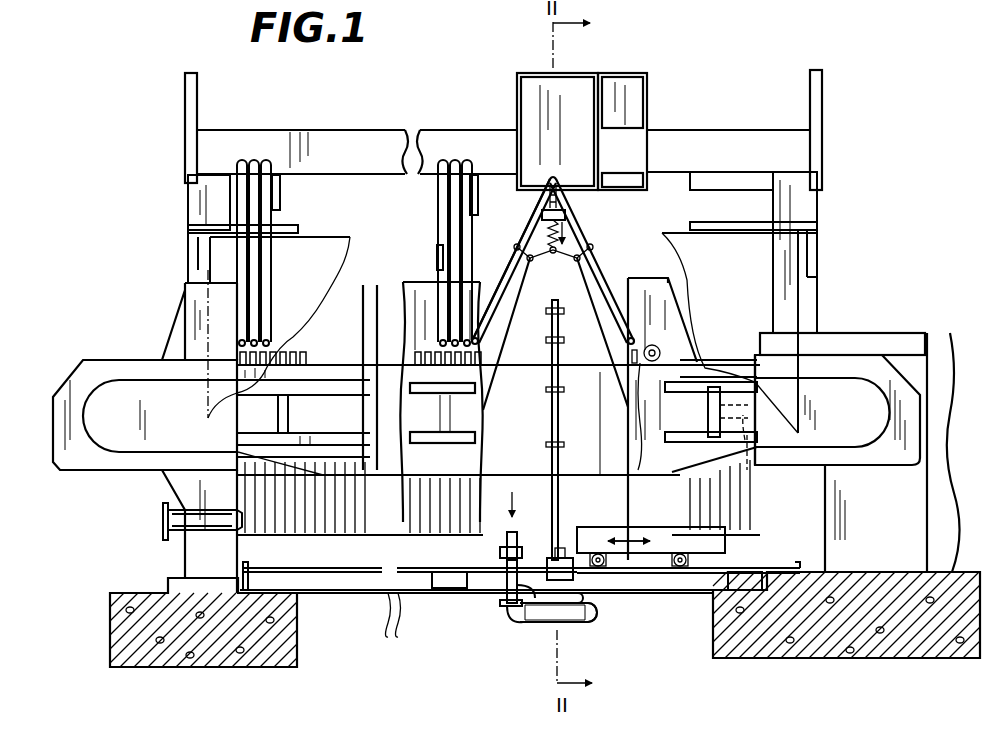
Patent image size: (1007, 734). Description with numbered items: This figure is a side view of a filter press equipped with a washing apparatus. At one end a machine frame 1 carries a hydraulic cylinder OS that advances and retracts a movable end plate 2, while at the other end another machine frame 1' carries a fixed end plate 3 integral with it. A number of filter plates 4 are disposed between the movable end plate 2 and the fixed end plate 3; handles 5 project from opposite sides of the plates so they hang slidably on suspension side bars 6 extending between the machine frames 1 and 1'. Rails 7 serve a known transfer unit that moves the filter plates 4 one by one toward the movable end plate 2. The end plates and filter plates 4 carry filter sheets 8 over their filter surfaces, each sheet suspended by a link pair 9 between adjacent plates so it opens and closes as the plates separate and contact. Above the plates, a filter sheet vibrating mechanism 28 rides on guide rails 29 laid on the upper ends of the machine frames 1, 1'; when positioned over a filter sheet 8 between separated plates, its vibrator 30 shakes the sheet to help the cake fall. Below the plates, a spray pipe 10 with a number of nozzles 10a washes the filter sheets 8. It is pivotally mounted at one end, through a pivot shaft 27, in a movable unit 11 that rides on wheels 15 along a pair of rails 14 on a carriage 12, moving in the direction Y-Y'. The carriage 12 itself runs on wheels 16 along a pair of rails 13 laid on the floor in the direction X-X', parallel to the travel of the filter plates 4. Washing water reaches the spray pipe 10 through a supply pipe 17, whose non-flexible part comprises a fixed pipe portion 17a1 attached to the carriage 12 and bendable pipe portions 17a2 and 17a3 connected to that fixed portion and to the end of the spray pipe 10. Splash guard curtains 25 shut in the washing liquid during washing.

The machine frame 1 is at (815, 402).
The machine frame 1' is at (194, 539).
The movable end plate 2 is at (660, 285).
The fixed end plate 3 is at (178, 318).
The filter plates 4 is at (420, 282).
The handles 5 is at (300, 353).
The suspension side bars 6 is at (588, 372).
The rails 7 is at (323, 390).
The filter sheets 8 is at (507, 319).
The link pair 9 is at (585, 218).
The spray pipe 10 is at (560, 422).
The nozzles 10a is at (560, 396).
The movable unit 11 is at (662, 585).
The carriage 12 is at (721, 560).
The rails 13 is at (697, 586).
The rails 14 is at (695, 536).
The wheels 15 is at (710, 538).
The wheels 16 is at (603, 562).
The supply pipe 17 is at (503, 630).
The fixed pipe portion 17a1 is at (508, 587).
The bendable pipe portion 17a2 is at (540, 623).
The bendable pipe portion 17a3 is at (574, 623).
The splash guard curtains 25 is at (800, 305).
The pivot shaft 27 is at (568, 558).
The filter sheet vibrating mechanism 28 is at (514, 109).
The guide rails 29 is at (721, 162).
The vibrator 30 is at (542, 213).
The hydraulic cylinder OS is at (745, 452).